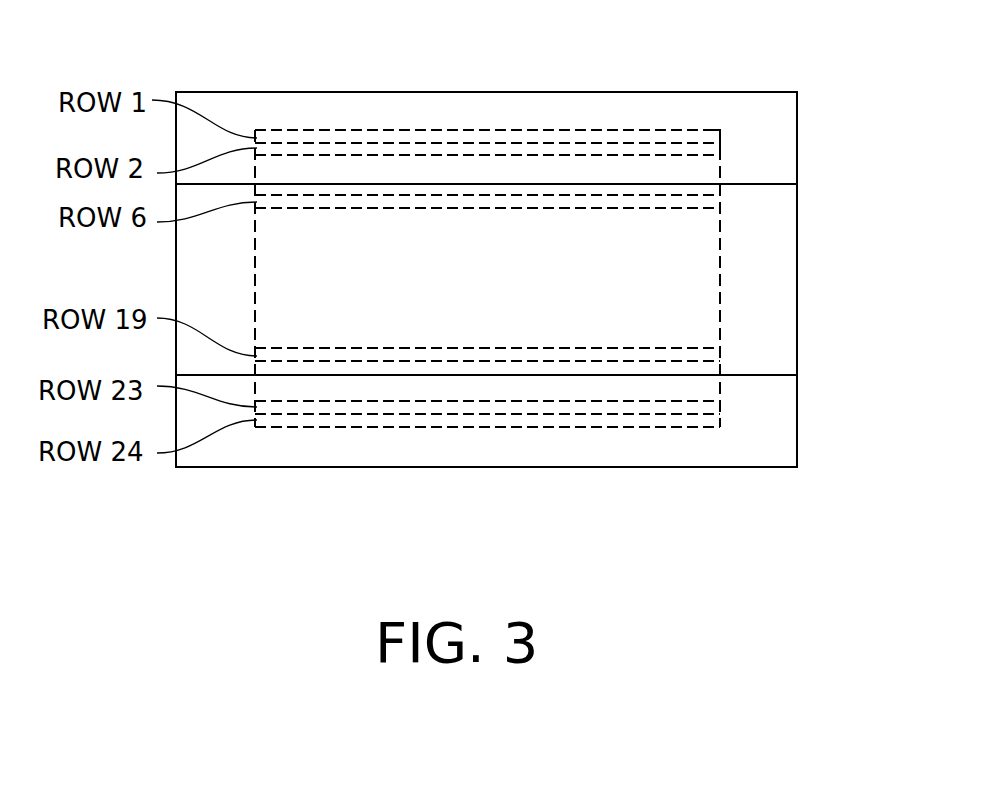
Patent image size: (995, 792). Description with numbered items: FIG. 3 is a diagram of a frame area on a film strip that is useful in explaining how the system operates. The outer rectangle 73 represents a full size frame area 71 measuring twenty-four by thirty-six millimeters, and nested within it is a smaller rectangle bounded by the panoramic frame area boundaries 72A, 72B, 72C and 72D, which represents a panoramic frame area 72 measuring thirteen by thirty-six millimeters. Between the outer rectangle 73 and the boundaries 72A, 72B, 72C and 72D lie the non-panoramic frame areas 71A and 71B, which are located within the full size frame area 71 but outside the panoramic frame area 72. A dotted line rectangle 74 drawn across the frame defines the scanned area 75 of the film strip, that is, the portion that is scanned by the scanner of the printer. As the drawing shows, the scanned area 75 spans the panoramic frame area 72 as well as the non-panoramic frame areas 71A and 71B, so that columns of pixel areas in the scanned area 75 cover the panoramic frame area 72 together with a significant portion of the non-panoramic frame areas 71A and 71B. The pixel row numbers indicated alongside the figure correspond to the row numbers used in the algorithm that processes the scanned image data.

The full size frame area 71 is at (785, 150).
The non-panoramic frame area 71A is at (325, 100).
The non-panoramic frame area 71B is at (329, 458).
The panoramic frame area 72 is at (262, 280).
The panoramic frame area boundary 72A is at (783, 184).
The panoramic frame area boundary 72B is at (177, 283).
The panoramic frame area boundary 72C is at (786, 377).
The panoramic frame area boundary 72D is at (797, 322).
The outer rectangle 73 is at (692, 92).
The dotted line rectangle 74 is at (722, 137).
The scanned area 75 is at (708, 279).